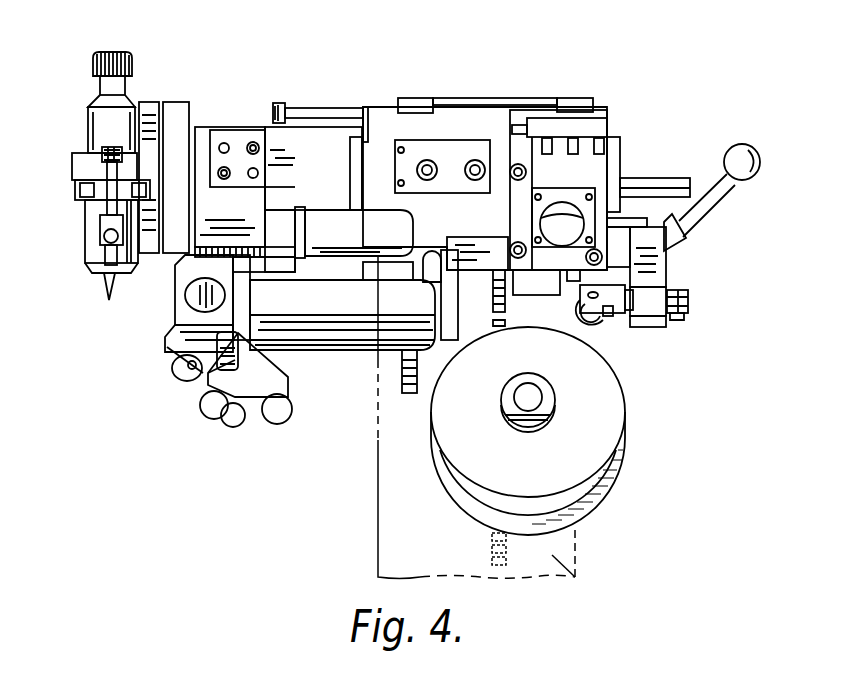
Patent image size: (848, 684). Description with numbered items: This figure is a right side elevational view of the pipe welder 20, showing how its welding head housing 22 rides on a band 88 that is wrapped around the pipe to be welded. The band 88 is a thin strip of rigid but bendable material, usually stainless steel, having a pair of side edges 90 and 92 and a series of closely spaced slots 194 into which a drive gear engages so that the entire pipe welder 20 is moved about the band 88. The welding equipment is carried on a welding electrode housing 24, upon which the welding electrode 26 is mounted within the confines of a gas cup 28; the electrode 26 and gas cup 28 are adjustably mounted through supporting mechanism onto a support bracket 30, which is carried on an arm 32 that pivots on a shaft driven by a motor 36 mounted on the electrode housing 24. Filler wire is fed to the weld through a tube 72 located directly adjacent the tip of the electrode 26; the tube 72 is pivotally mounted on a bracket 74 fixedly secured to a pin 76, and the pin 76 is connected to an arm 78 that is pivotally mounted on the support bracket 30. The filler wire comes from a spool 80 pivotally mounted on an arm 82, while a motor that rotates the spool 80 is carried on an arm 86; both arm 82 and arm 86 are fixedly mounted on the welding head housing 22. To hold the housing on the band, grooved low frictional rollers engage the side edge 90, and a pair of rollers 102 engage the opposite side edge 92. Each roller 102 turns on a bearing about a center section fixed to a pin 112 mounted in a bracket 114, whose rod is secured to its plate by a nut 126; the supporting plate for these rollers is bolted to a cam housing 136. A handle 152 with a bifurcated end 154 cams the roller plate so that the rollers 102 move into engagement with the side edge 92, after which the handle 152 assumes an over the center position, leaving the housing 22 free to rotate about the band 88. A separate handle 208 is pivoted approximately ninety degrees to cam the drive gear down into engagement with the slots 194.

The pipe welder 20 is at (499, 83).
The welding head housing 22 is at (452, 215).
The welding electrode housing 24 is at (184, 102).
The welding electrode 26 is at (106, 297).
The gas cup 28 is at (89, 247).
The support bracket 30 is at (150, 106).
The arm 32 is at (171, 265).
The motor 36 is at (326, 222).
The tube 72 is at (97, 272).
The bracket 74 is at (102, 228).
The pin 76 is at (104, 150).
The arm 78 is at (110, 190).
The spool 80 is at (612, 420).
The arm 82 is at (432, 378).
The arm 86 is at (183, 343).
The band 88 is at (575, 577).
The side edge 90 is at (378, 486).
The side edge 92 is at (575, 545).
The roller 102 is at (597, 302).
The pin 112 is at (606, 312).
The bracket 114 is at (628, 308).
The nut 126 is at (690, 301).
The cam housing 136 is at (655, 268).
The handle 152 is at (718, 198).
The bifurcated end 154 is at (683, 248).
The slots 194 is at (500, 566).
The handle 208 is at (648, 184).